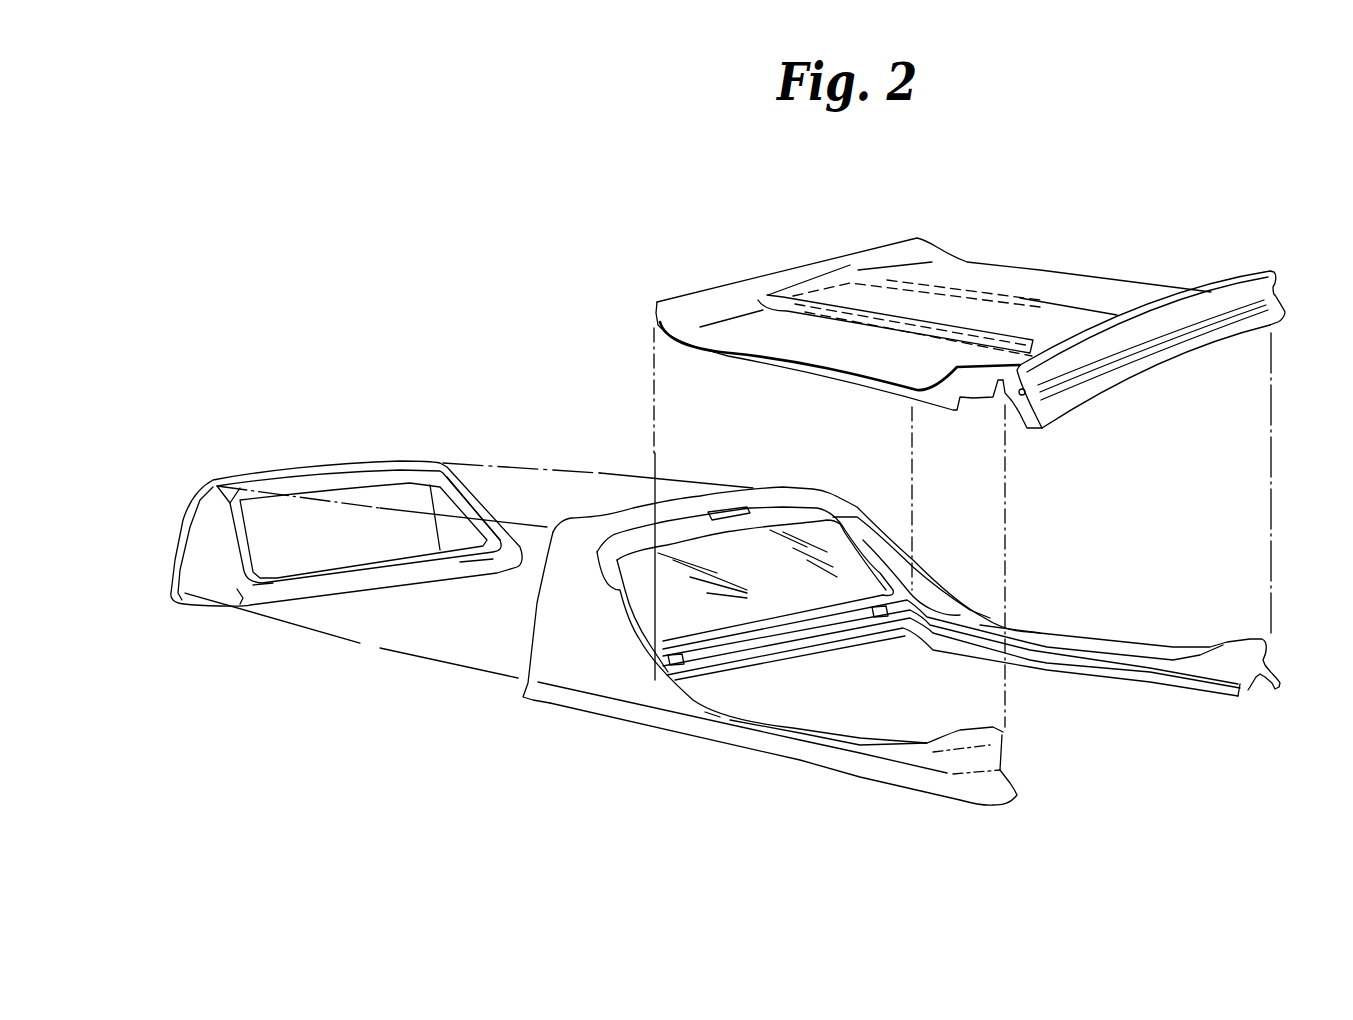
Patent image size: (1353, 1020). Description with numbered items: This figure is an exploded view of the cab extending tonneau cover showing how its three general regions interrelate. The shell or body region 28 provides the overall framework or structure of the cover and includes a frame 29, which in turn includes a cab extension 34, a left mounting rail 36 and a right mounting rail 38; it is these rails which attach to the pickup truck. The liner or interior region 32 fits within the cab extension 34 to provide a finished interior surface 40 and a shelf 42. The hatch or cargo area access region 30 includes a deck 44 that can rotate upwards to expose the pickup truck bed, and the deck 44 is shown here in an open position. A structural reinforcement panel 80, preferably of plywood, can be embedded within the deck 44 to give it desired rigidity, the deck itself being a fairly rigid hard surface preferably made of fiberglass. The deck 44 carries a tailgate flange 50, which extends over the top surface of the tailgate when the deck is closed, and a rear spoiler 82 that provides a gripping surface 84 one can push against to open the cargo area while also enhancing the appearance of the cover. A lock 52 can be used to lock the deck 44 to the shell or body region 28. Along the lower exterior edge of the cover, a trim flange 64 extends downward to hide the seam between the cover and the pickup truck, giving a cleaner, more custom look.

The shell or body region 28 is at (1096, 619).
The frame 29 is at (1177, 657).
The hatch or cargo area access region 30 is at (1082, 258).
The liner or interior region 32 is at (389, 453).
The cab extension 34 is at (578, 653).
The left mounting rail 36 is at (800, 743).
The right mounting rail 38 is at (1037, 633).
The finished interior surface 40 is at (478, 546).
The shelf 42 is at (401, 596).
The deck 44 is at (977, 277).
The tailgate flange 50 is at (1177, 357).
The lock 52 is at (1035, 425).
The trim flange 64 is at (890, 773).
The structural reinforcement panel 80 is at (840, 282).
The rear spoiler 82 is at (1237, 277).
The gripping surface 84 is at (1173, 318).